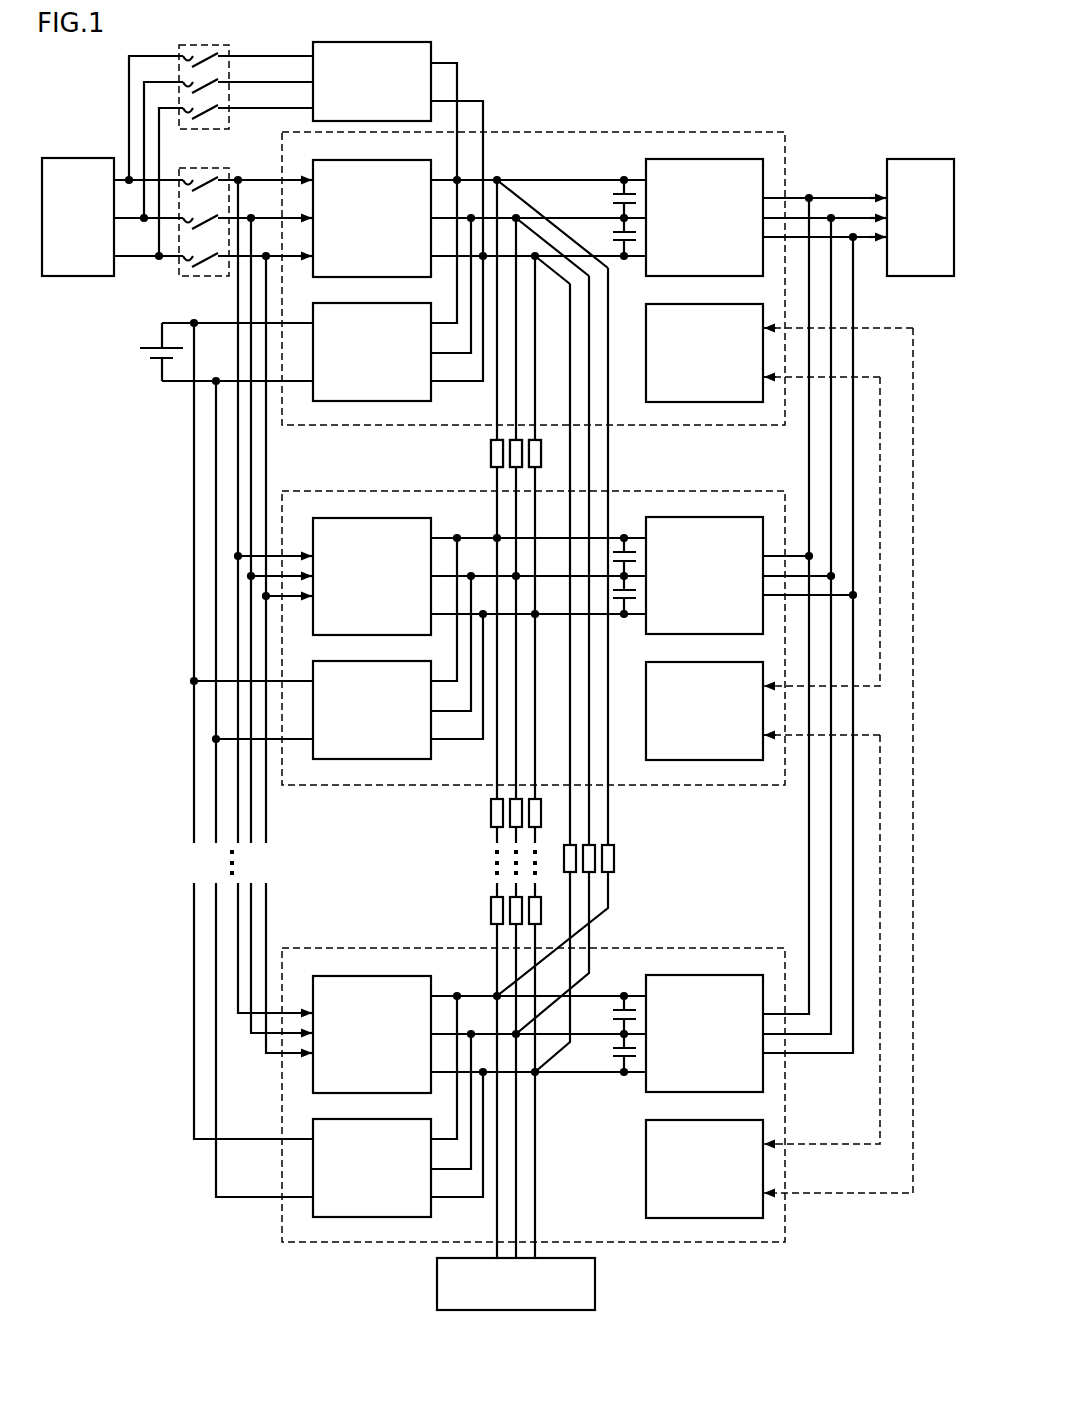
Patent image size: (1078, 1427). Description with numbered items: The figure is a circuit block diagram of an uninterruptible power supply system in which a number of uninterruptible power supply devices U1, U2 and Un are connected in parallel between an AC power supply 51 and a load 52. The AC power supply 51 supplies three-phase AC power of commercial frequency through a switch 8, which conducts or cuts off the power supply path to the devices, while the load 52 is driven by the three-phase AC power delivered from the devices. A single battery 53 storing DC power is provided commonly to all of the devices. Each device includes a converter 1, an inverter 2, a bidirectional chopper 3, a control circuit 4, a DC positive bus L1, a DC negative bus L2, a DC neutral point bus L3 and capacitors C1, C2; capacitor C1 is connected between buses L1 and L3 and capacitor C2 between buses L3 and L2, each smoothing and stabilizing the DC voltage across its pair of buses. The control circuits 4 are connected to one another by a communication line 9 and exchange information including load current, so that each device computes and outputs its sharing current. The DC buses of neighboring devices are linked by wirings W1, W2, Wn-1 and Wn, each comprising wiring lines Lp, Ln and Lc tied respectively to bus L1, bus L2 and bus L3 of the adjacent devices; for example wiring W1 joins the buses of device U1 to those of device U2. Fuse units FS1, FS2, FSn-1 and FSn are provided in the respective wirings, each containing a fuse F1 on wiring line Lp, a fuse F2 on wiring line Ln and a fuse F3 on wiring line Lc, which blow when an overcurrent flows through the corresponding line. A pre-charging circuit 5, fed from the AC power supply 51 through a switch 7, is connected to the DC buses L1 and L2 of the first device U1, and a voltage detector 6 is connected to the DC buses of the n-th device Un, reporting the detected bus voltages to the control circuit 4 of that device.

The converter 1 is at (378, 278).
The inverter 2 is at (732, 278).
The bidirectional chopper 3 is at (378, 402).
The control circuit 4 is at (732, 403).
The pre-charging circuit 5 is at (397, 42).
The voltage detector 6 is at (595, 1283).
The switch 7 is at (208, 46).
The switch 8 is at (206, 168).
The communication line 9 is at (880, 328).
The AC power supply 51 is at (85, 158).
The load 52 is at (940, 158).
The battery 53 is at (155, 346).
The DC positive bus L1 is at (582, 178).
The DC negative bus L2 is at (447, 258).
The DC neutral point bus L3 is at (596, 217).
The capacitor C1 is at (630, 186).
The capacitor C2 is at (634, 244).
The wiring line Lp is at (496, 398).
The wiring line Lc is at (517, 394).
The wiring line Ln is at (535, 356).
The wiring W1 is at (562, 418).
The wiring W2 is at (568, 776).
The wiring Wn is at (553, 812).
The wiring Wn-1 is at (552, 944).
The fuse unit FS1 is at (436, 440).
The fuse unit FS2 is at (436, 797).
The fuse unit FSn-1 is at (436, 865).
The fuse unit FSn is at (673, 843).
The fuse F1 is at (490, 459).
The fuse F2 is at (532, 440).
The fuse F3 is at (516, 468).
The uninterruptible power supply device U1 is at (760, 427).
The uninterruptible power supply device U2 is at (760, 787).
The uninterruptible power supply device Un is at (722, 1245).